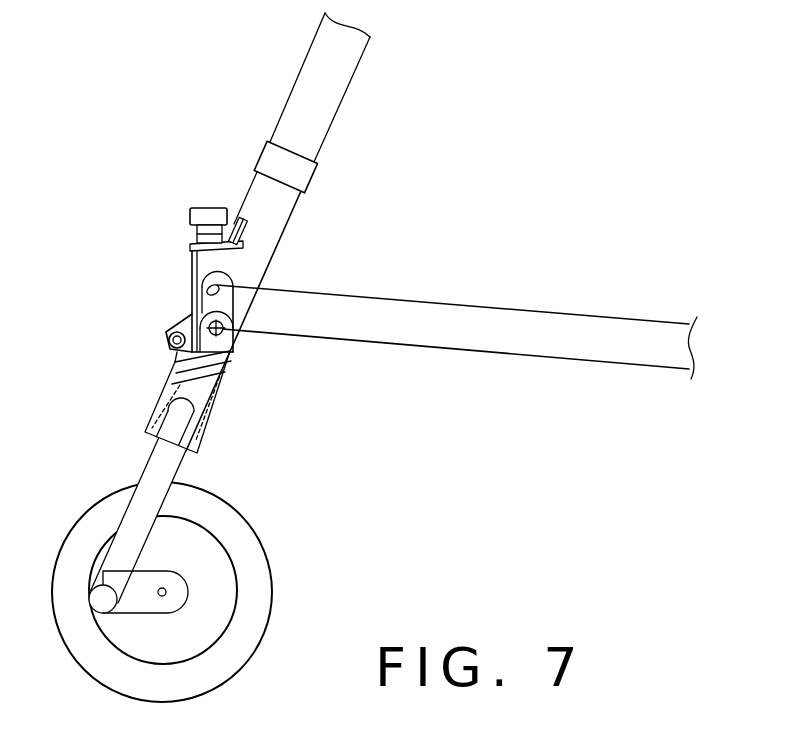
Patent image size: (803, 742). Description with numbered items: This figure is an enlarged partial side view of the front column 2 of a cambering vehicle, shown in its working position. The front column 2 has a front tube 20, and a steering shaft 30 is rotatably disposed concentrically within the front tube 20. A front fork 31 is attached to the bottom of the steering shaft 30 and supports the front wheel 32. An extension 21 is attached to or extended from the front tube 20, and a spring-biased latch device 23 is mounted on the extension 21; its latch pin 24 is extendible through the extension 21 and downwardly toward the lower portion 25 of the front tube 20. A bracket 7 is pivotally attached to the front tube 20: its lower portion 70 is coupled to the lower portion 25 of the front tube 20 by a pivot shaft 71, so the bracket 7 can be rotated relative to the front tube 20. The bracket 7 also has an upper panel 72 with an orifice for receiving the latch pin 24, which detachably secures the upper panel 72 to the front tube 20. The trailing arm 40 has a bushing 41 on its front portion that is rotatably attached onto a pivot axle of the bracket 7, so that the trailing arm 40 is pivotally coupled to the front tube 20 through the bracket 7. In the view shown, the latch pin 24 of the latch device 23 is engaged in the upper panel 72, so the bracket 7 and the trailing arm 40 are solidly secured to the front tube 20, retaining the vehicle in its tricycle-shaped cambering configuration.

The front column 2 is at (226, 157).
The bracket 7 is at (193, 283).
The front tube 20 is at (283, 204).
The extension 21 is at (190, 246).
The spring-biased latch device 23 is at (203, 213).
The latch pin 24 is at (220, 266).
The lower portion 25 is at (222, 362).
The steering shaft 30 is at (298, 92).
The front fork 31 is at (163, 464).
The front wheel 32 is at (258, 576).
The trailing arm 40 is at (512, 316).
The bushing 41 is at (220, 300).
The lower portion 70 is at (188, 320).
The pivot shaft 71 is at (171, 352).
The upper panel 72 is at (247, 247).